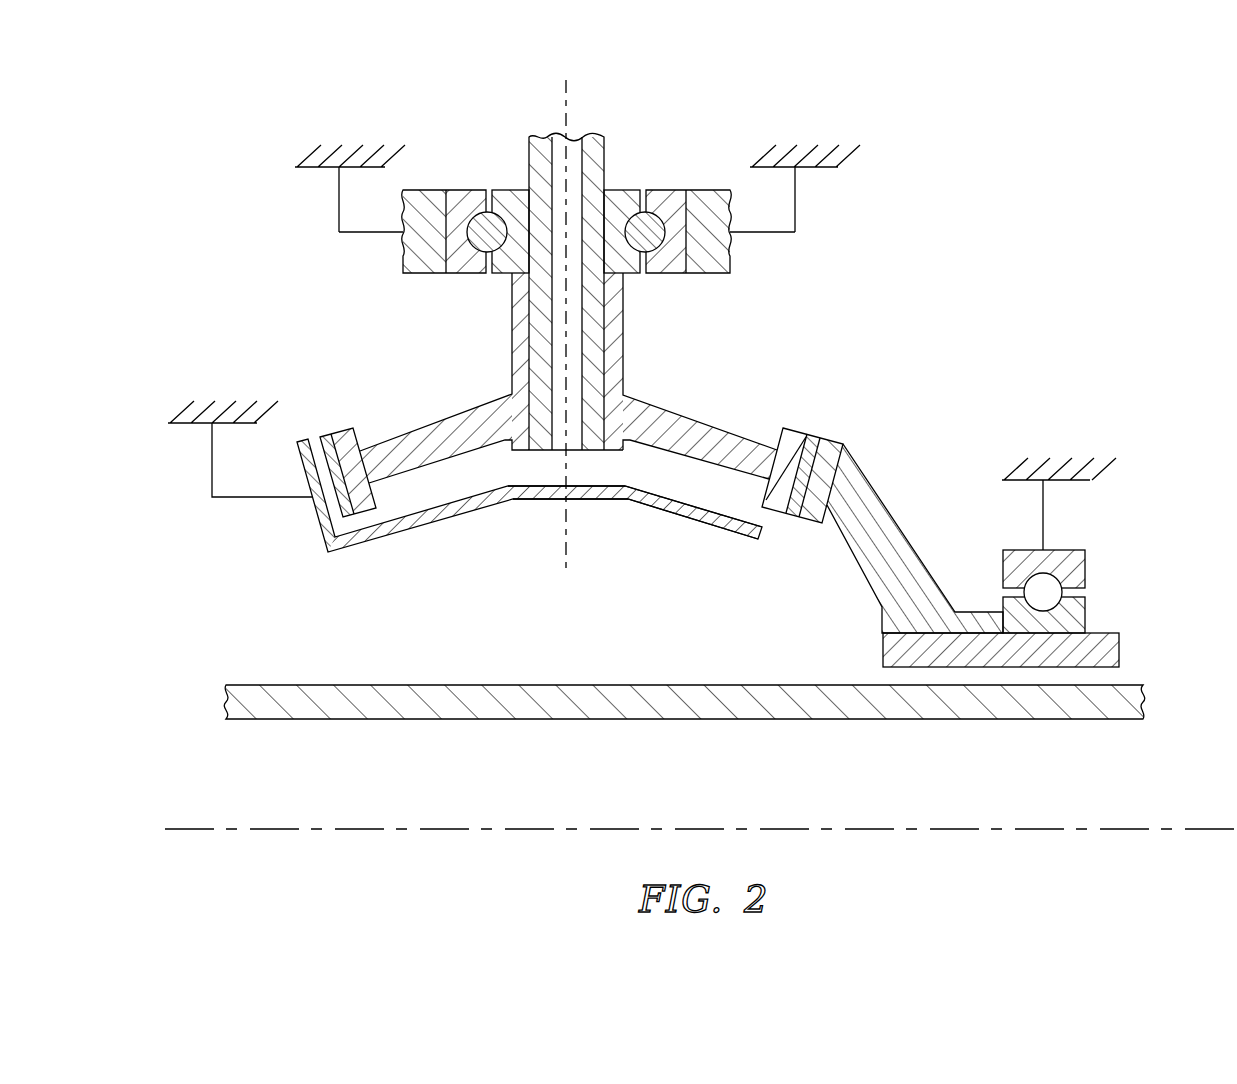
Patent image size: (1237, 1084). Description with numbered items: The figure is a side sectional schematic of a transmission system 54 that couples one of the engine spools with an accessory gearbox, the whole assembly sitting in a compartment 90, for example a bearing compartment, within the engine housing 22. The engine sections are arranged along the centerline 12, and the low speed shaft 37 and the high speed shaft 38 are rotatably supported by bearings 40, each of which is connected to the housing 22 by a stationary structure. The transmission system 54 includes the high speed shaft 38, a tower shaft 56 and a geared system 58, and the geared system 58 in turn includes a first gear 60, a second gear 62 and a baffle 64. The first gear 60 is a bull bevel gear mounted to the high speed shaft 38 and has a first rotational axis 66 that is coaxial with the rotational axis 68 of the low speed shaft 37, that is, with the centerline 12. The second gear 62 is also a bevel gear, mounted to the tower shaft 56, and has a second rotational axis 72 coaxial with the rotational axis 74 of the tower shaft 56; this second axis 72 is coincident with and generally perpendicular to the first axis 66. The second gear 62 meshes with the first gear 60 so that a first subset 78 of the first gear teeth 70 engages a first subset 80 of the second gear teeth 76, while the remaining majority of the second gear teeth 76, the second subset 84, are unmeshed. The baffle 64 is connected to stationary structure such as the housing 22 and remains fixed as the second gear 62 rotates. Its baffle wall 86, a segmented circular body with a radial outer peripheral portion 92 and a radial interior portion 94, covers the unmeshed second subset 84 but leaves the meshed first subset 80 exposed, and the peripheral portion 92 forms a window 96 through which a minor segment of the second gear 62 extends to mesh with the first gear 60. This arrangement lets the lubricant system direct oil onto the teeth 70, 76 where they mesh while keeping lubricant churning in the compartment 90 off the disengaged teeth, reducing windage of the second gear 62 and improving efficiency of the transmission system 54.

The centerline 12 is at (701, 851).
The engine housing 22 is at (353, 138).
The low speed shaft 37 is at (1119, 648).
The high speed shaft 38 is at (1143, 710).
The bearings 40 is at (1085, 567).
The transmission system 54 is at (948, 262).
The tower shaft 56 is at (605, 152).
The geared system 58 is at (839, 430).
The first gear 60 is at (900, 537).
The second gear 62 is at (681, 410).
The baffle 64 is at (337, 558).
The first rotational axis 66 is at (701, 851).
The rotational axis of the low speed shaft 68 is at (1020, 830).
The first gear teeth 70 is at (847, 439).
The second rotational axis 72 is at (637, 341).
The rotational axis of the tower shaft 74 is at (567, 556).
The second gear teeth 76 is at (323, 433).
The first subset of the first gear teeth 78 is at (847, 472).
The first subset of the second gear teeth 80 is at (773, 433).
The second subset of the second gear teeth 84 is at (347, 422).
The baffle wall 86 is at (508, 540).
The compartment 90 is at (362, 317).
The radial outer peripheral portion 92 is at (313, 534).
The radial interior portion 94 is at (508, 507).
The window 96 is at (772, 523).